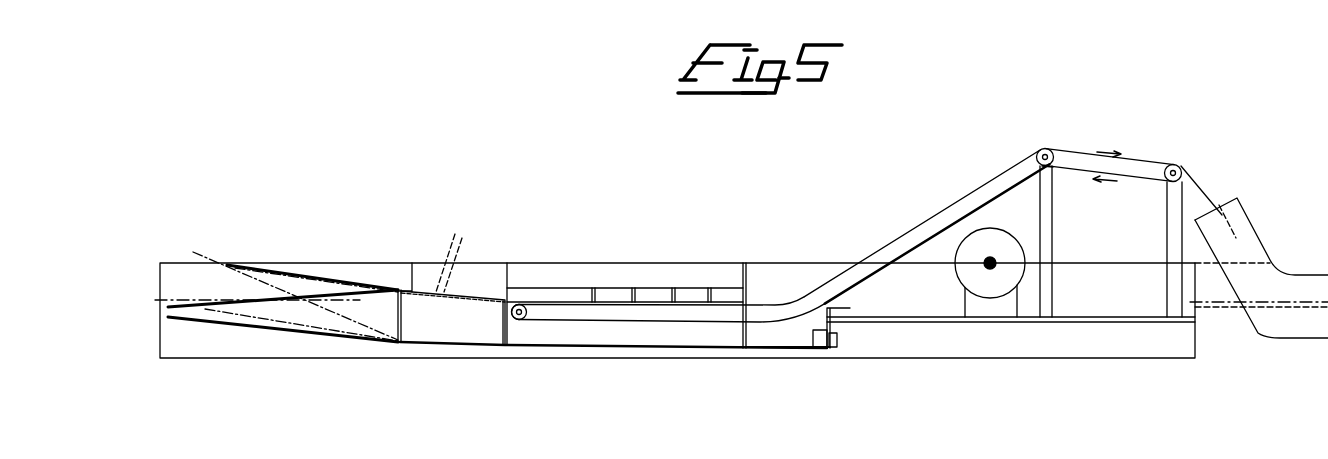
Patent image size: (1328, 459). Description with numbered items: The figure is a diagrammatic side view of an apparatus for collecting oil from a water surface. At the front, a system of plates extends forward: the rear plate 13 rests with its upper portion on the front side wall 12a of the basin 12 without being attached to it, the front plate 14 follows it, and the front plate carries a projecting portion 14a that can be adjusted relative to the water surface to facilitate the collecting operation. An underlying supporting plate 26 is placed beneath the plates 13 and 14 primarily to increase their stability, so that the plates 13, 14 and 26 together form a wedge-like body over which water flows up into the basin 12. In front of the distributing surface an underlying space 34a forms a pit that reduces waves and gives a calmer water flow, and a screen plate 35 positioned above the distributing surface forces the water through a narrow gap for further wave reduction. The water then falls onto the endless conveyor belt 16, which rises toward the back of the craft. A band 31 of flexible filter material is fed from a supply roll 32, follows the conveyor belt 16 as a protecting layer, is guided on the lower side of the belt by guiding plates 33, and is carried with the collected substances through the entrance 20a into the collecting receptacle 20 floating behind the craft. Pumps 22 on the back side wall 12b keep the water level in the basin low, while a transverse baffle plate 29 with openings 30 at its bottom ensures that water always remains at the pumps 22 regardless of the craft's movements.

The basin 12 is at (615, 342).
The front side wall 12a is at (408, 333).
The back side wall 12b is at (831, 311).
The rear plate 13 is at (338, 292).
The front plate 14 is at (252, 302).
The projecting portion 14a is at (185, 302).
The endless conveyor belt 16 is at (889, 243).
The collecting receptacle 20 is at (1303, 334).
The entrance 20a is at (1223, 203).
The pumps 22 is at (837, 343).
The supporting plate 26 is at (282, 326).
The transverse baffle plate 29 is at (737, 330).
The openings 30 is at (746, 343).
The band 31 is at (980, 211).
The supply roll 32 is at (1013, 250).
The guiding plates 33 is at (912, 256).
The underlying space 34a is at (455, 335).
The screen plate 35 is at (460, 234).